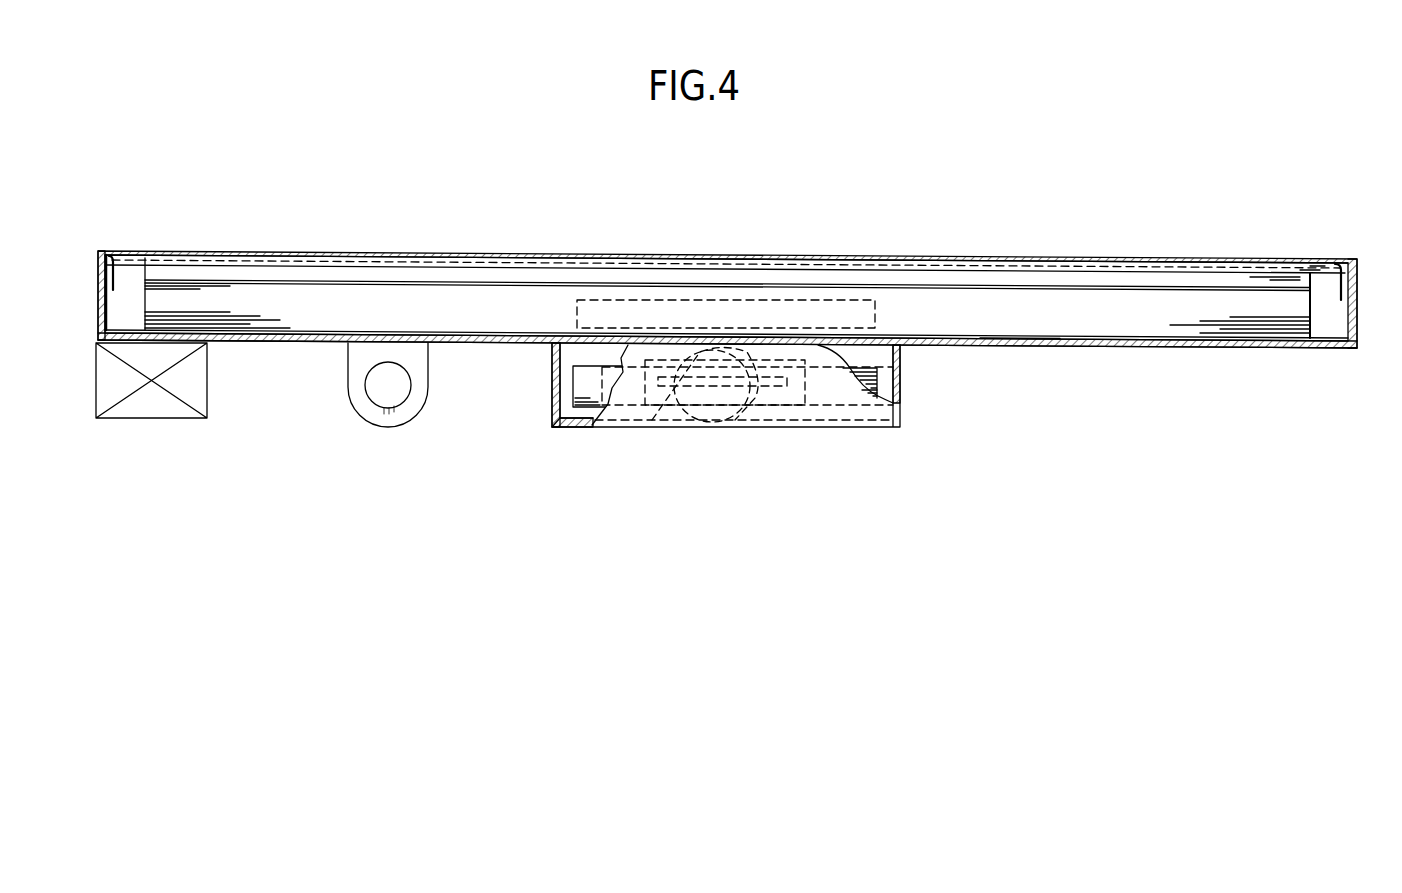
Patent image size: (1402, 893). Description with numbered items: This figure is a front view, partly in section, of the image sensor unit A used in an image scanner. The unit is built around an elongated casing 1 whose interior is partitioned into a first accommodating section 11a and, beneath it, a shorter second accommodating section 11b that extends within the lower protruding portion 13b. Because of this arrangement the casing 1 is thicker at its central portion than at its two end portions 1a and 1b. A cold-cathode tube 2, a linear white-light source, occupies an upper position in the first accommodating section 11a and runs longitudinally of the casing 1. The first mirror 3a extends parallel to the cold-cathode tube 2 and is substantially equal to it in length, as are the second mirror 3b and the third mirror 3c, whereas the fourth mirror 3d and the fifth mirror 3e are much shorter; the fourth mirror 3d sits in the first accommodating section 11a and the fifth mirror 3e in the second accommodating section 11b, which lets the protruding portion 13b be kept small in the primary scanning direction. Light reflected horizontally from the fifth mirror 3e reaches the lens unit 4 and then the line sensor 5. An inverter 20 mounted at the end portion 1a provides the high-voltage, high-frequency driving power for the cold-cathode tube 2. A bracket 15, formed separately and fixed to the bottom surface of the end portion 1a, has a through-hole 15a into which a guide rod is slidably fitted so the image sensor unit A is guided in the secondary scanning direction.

The image sensor unit A is at (1232, 191).
The casing 1 is at (724, 301).
The end portion 1a is at (98, 327).
The end portion 1b is at (1332, 348).
The cold-cathode tube 2 is at (830, 256).
The first mirror 3a is at (1167, 283).
The second mirror 3b is at (1188, 318).
The third mirror 3c is at (1152, 320).
The fourth mirror 3d is at (870, 300).
The fifth mirror 3e is at (877, 383).
The lens unit 4 is at (723, 420).
The line sensor 5 is at (646, 422).
The first accommodating section 11a is at (1012, 325).
The second accommodating section 11b is at (880, 358).
The lower protruding portion 13b is at (863, 415).
The bracket 15 is at (422, 390).
The through-hole 15a is at (392, 392).
The inverter 20 is at (157, 403).